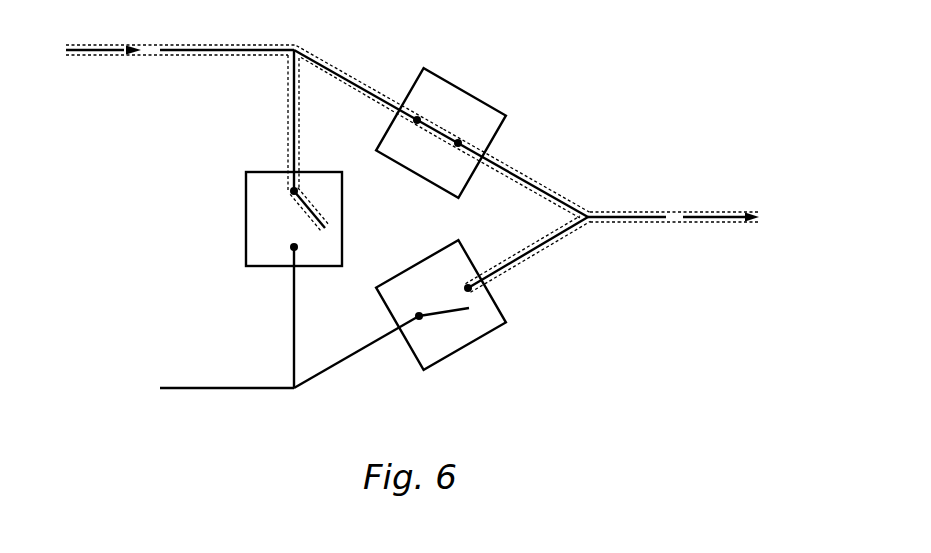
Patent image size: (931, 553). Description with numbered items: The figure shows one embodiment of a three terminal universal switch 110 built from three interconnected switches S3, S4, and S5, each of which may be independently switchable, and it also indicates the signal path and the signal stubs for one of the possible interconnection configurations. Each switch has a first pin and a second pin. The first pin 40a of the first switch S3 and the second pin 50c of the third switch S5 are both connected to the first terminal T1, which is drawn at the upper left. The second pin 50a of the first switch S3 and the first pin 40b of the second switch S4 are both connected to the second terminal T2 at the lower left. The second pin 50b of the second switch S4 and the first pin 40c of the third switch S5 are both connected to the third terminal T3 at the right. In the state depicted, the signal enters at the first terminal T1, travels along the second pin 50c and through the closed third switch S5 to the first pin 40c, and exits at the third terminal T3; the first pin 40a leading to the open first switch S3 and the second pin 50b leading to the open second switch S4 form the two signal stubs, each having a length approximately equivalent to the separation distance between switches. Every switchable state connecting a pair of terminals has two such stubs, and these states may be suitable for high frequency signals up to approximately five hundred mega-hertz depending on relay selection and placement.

The first pin of the first switch 40a is at (292, 131).
The first pin of the second switch 40b is at (343, 365).
The first pin of the third switch 40c is at (533, 176).
The second pin of the first switch 50a is at (292, 313).
The second pin of the second switch 50b is at (535, 255).
The second pin of the third switch 50c is at (344, 69).
The three terminal universal switch 110 is at (566, 78).
The first switch S3 is at (294, 219).
The second switch S4 is at (441, 305).
The third switch S5 is at (441, 133).
The first terminal T1 is at (171, 49).
The second terminal T2 is at (227, 402).
The third terminal T3 is at (674, 230).